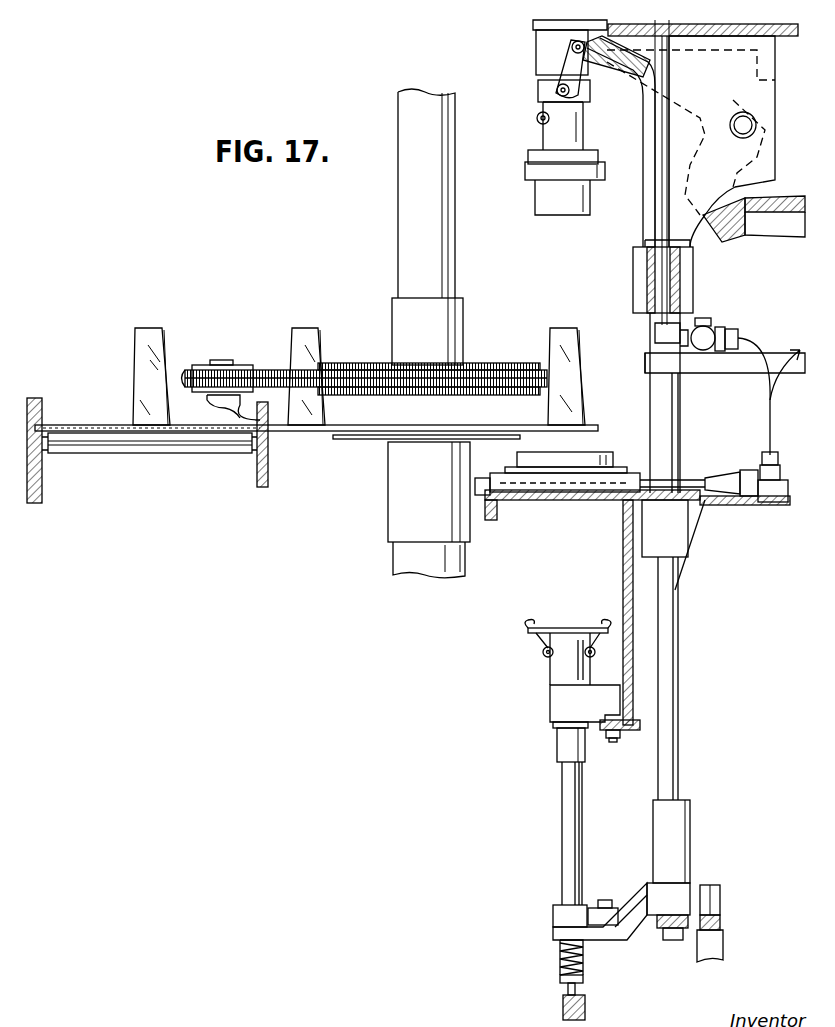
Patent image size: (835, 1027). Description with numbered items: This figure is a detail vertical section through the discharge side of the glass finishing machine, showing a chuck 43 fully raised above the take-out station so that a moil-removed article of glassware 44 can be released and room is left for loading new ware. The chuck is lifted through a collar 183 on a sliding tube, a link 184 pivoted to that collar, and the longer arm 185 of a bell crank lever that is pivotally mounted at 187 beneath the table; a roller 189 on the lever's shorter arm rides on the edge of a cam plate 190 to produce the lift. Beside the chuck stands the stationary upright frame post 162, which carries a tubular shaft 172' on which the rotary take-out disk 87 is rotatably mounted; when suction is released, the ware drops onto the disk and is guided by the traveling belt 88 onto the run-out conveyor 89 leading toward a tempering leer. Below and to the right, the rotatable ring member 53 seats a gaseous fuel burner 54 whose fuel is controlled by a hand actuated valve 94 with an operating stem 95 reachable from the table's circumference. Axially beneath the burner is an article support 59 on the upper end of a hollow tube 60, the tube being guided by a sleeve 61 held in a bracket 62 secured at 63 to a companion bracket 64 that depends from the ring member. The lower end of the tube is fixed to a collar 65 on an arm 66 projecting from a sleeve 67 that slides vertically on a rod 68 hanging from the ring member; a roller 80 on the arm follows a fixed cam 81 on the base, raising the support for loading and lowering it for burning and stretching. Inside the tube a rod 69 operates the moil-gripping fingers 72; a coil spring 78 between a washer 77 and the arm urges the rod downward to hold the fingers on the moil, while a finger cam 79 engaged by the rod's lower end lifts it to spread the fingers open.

The chuck 43 is at (527, 174).
The hollow article of glassware 44 is at (136, 348).
The ring member 53 is at (590, 501).
The gaseous fuel burner 54 is at (610, 456).
The article support 59 is at (565, 628).
The tube 60 is at (565, 816).
The sleeve 61 is at (550, 708).
The bracket 62 is at (575, 728).
The securing means 63 is at (613, 742).
The companion bracket 64 is at (622, 572).
The collar 65 is at (553, 915).
The arm 66 is at (627, 935).
The sleeve 67 is at (672, 845).
The vertical rod 68 is at (670, 737).
The rod 69 is at (578, 986).
The moil-gripping finger 72 is at (540, 645).
The washer 77 is at (560, 977).
The coil spring 78 is at (560, 955).
The finger cam 79 is at (563, 1000).
The roller 80 is at (718, 897).
The fixed cam 81 is at (722, 925).
The rotary takeout disk 87 is at (320, 433).
The traveling belt 88 is at (470, 367).
The run-out conveyor 89 is at (75, 428).
The hand actuated valve 94 is at (725, 478).
The operating stem 95 is at (690, 478).
The stationary upright frame post 162 is at (438, 260).
The tubular shaft 172' is at (407, 510).
The collar 183 is at (540, 88).
The link 184 is at (566, 65).
The longer arm 185 is at (640, 88).
The pivot 187 is at (755, 125).
The roller 189 is at (710, 228).
The cam plate 190 is at (765, 226).